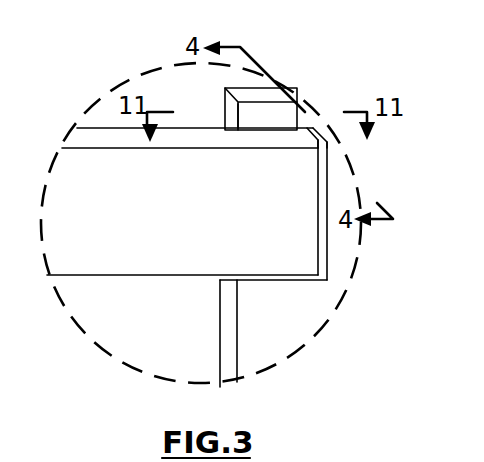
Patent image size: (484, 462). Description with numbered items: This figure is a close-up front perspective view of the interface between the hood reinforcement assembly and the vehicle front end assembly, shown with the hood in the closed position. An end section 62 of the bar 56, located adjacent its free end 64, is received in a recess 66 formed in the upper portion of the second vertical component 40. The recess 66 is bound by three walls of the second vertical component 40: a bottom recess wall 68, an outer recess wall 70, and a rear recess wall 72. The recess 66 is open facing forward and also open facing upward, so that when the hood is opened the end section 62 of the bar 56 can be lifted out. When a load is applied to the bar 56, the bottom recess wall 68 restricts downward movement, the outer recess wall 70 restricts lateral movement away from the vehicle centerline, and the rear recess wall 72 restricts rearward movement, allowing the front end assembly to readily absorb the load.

The second vertical component 40 is at (302, 321).
The bar 56 is at (105, 137).
The end section 62 is at (300, 134).
The free end 64 is at (320, 202).
The recess 66 is at (236, 117).
The bottom recess wall 68 is at (293, 281).
The outer recess wall 70 is at (320, 167).
The rear recess wall 72 is at (274, 112).